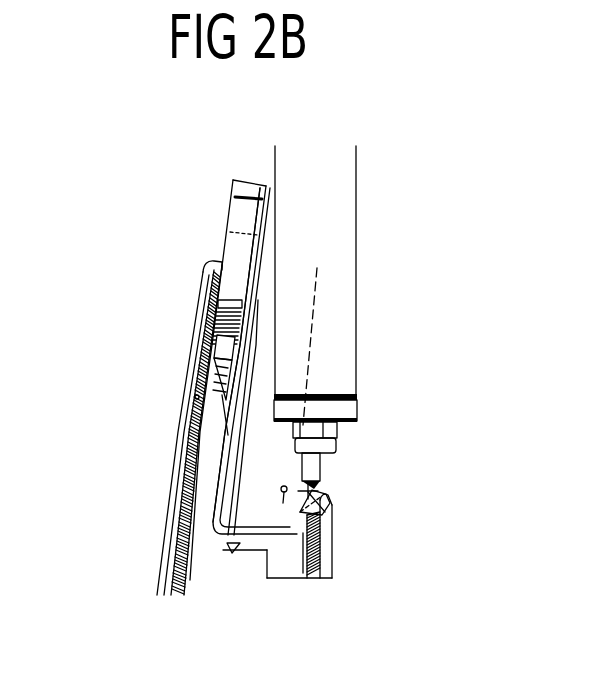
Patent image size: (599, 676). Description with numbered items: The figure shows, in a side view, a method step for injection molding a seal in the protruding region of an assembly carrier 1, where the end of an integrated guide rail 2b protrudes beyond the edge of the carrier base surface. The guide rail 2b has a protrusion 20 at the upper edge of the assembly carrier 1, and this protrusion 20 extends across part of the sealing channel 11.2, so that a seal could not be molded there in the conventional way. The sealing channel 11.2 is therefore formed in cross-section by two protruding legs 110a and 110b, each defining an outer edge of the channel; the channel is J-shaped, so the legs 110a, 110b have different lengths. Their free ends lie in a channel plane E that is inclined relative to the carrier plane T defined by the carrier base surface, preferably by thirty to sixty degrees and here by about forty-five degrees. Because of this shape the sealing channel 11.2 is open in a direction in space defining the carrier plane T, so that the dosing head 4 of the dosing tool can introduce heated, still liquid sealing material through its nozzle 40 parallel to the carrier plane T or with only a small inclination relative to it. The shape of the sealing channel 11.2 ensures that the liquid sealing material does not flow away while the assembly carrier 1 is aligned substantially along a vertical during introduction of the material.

The assembly carrier 1 is at (142, 572).
The guide rail 2b is at (172, 353).
The dosing head 4 is at (366, 165).
The protrusion 20 is at (243, 221).
The nozzle 40 is at (315, 460).
The protruding leg 110a is at (297, 517).
The protruding leg 110b is at (328, 496).
The sealing channel 11.2 is at (340, 523).
The carrier plane T is at (306, 343).
The channel plane E is at (328, 494).